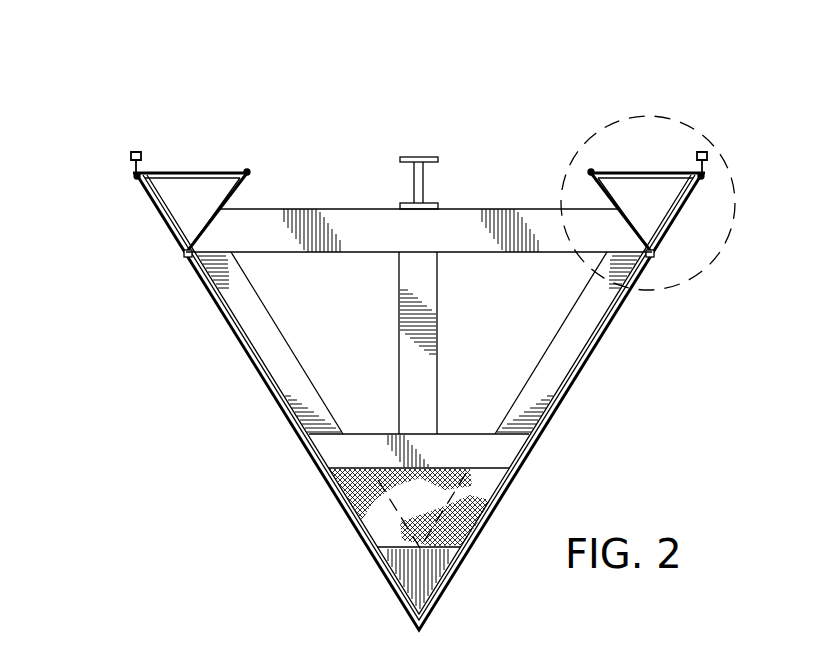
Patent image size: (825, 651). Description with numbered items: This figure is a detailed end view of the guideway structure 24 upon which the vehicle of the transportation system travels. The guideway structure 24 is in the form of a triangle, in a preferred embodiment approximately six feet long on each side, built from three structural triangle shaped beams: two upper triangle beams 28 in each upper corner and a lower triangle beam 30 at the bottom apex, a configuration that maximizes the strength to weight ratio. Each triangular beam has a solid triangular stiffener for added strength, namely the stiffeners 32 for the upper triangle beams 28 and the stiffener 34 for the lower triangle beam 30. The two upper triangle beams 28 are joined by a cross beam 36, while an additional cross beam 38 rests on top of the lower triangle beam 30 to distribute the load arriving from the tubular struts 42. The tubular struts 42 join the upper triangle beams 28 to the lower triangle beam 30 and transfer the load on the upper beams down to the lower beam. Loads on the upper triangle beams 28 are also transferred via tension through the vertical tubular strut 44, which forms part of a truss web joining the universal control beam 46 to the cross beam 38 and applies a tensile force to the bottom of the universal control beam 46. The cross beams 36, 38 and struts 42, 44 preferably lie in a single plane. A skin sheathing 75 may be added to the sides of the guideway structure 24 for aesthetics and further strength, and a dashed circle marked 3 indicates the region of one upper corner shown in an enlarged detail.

The detail view circle (FIG. 3 area) 3 is at (693, 130).
The guideway structure 24 is at (483, 170).
The upper triangle beam 28 is at (168, 230).
The lower triangle beam 30 is at (373, 520).
The stiffener 32 is at (190, 250).
The stiffener 34 is at (433, 567).
The cross beam 36 is at (283, 208).
The cross beam 38 is at (512, 453).
The tubular strut 42 is at (273, 367).
The tubular strut 44 is at (428, 298).
The universal control beam 46 is at (414, 155).
The skin sheathing 75 is at (612, 333).